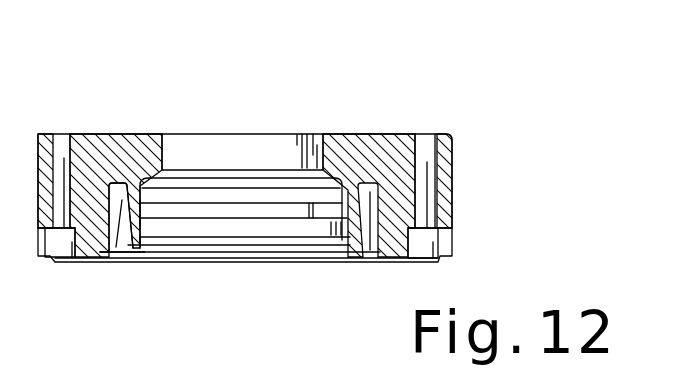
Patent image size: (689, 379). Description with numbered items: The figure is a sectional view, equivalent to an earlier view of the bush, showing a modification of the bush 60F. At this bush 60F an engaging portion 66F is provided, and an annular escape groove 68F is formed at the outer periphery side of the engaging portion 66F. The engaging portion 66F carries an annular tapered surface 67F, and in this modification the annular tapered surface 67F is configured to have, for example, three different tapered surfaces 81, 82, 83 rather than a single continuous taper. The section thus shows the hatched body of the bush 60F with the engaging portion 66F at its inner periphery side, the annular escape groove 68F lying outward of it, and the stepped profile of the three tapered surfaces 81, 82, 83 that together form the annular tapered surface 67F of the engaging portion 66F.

The bush 60F is at (422, 128).
The engaging portion 66F is at (347, 238).
The annular tapered surface 67F is at (247, 322).
The annular escape groove 68F is at (102, 225).
The tapered surface 81 is at (138, 240).
The tapered surface 82 is at (140, 220).
The tapered surface 83 is at (142, 207).